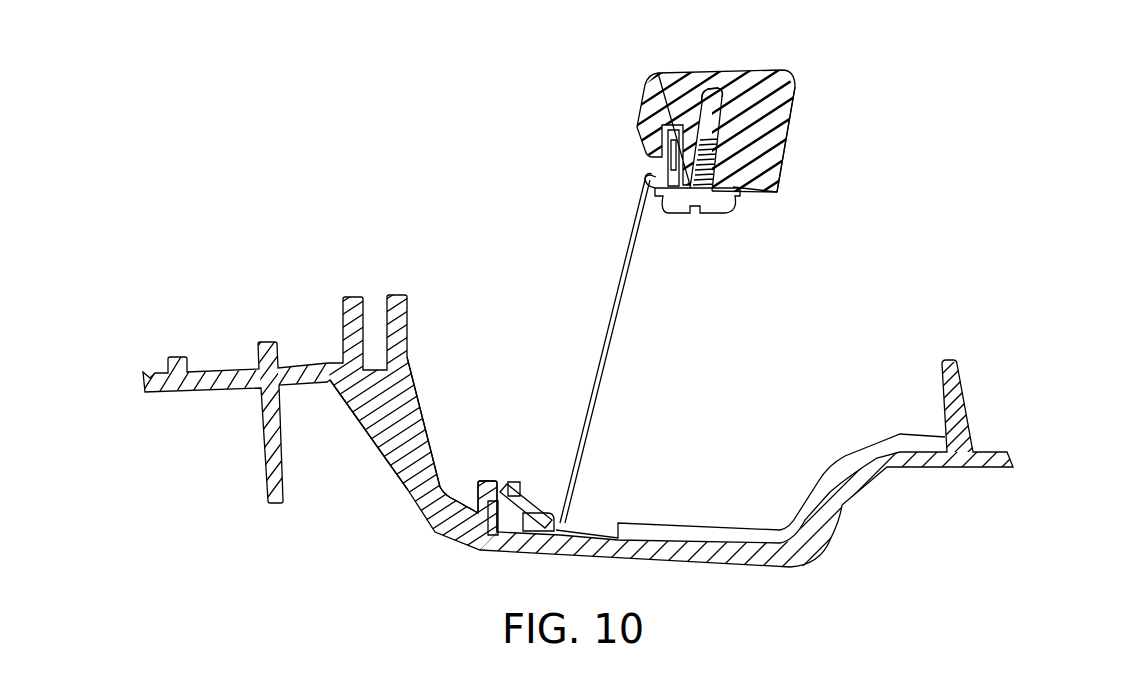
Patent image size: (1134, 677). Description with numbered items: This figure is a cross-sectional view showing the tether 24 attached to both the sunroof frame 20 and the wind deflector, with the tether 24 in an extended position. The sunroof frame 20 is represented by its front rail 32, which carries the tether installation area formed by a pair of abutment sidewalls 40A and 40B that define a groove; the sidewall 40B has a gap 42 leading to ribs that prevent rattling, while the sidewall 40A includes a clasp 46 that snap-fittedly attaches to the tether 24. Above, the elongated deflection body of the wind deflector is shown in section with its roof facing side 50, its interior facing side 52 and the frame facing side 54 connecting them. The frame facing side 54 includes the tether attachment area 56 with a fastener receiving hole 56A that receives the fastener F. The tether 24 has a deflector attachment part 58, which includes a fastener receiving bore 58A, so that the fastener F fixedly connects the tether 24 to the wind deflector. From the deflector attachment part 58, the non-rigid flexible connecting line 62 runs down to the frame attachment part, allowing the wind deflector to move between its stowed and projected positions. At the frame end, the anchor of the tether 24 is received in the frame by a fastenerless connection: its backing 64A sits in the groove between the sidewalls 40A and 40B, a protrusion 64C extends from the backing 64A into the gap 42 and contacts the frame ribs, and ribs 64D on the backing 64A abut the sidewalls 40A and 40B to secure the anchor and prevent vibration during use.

The sunroof frame 20 is at (255, 452).
The tether 24 is at (508, 123).
The front rail 32 is at (368, 423).
The sidewall 40A is at (456, 495).
The sidewall 40B is at (532, 492).
The gap 42 is at (592, 530).
The clasp 46 is at (484, 479).
The roof facing side 50 is at (755, 70).
The interior facing side 52 is at (788, 139).
The frame facing side 54 is at (762, 195).
The tether attachment area 56 is at (756, 238).
The fastener receiving hole 56A is at (717, 95).
The deflector attachment part 58 is at (650, 177).
The fastener receiving bore 58A is at (681, 201).
The connecting line 62 is at (605, 338).
The backing 64A is at (522, 484).
The protrusion 64C is at (536, 532).
The ribs 64D is at (490, 536).
The fastener F is at (705, 213).